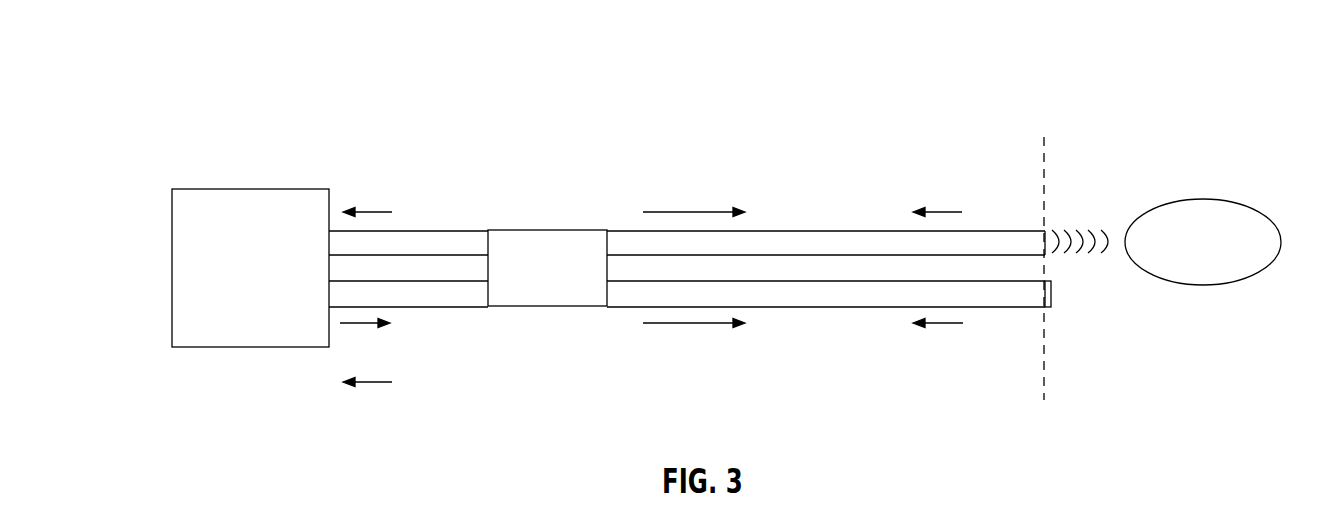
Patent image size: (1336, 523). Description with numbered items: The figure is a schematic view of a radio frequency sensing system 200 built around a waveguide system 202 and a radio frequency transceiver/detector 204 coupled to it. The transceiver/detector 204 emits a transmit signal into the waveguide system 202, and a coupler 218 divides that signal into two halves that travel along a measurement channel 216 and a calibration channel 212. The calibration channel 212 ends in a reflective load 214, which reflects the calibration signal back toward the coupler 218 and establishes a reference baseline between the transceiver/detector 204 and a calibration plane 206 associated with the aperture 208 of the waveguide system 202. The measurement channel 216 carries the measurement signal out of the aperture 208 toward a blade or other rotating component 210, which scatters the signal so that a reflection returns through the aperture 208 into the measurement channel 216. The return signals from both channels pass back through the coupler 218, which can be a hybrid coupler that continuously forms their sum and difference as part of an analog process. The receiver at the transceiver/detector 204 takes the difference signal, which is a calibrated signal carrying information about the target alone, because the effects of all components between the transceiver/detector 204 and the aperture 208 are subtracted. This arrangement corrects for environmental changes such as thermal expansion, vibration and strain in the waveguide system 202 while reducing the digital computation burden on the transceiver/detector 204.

The radio frequency sensing system 200 is at (166, 71).
The waveguide system 202 is at (895, 352).
The radio frequency transceiver/detector 204 is at (172, 270).
The calibration plane 206 is at (1065, 93).
The aperture 208 is at (1040, 230).
The rotating component 210 is at (1247, 205).
The calibration channel 212 is at (617, 310).
The reflective load 214 is at (1063, 297).
The measurement channel 216 is at (782, 230).
The coupler 218 is at (570, 282).